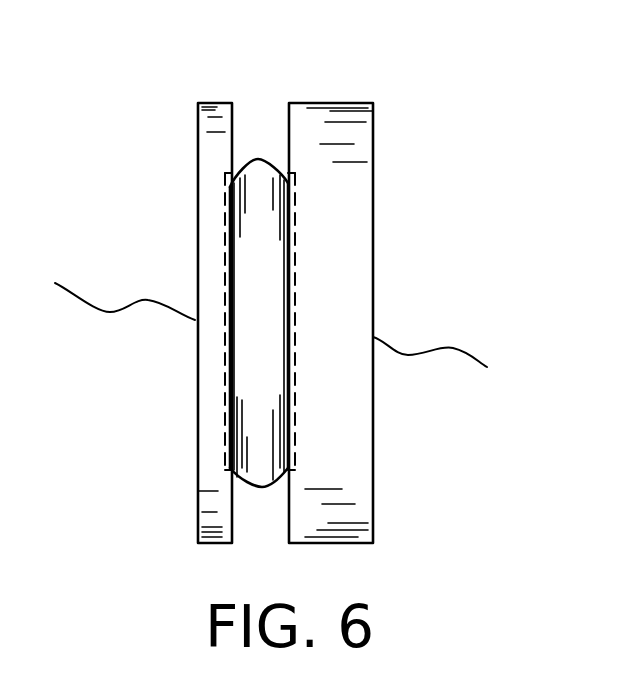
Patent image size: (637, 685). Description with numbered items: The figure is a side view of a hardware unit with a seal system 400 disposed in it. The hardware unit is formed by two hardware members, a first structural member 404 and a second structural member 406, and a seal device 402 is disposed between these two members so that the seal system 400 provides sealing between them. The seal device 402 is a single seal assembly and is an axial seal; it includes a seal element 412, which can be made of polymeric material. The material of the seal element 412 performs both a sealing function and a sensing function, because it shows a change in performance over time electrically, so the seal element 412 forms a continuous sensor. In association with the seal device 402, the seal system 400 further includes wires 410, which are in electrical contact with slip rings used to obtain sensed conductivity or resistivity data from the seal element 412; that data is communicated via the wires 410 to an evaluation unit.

The seal system 400 is at (530, 82).
The seal device 402 is at (242, 68).
The first structural member 404 is at (198, 140).
The second structural member 406 is at (373, 477).
The wires 410 is at (78, 300).
The seal element 412 is at (259, 158).